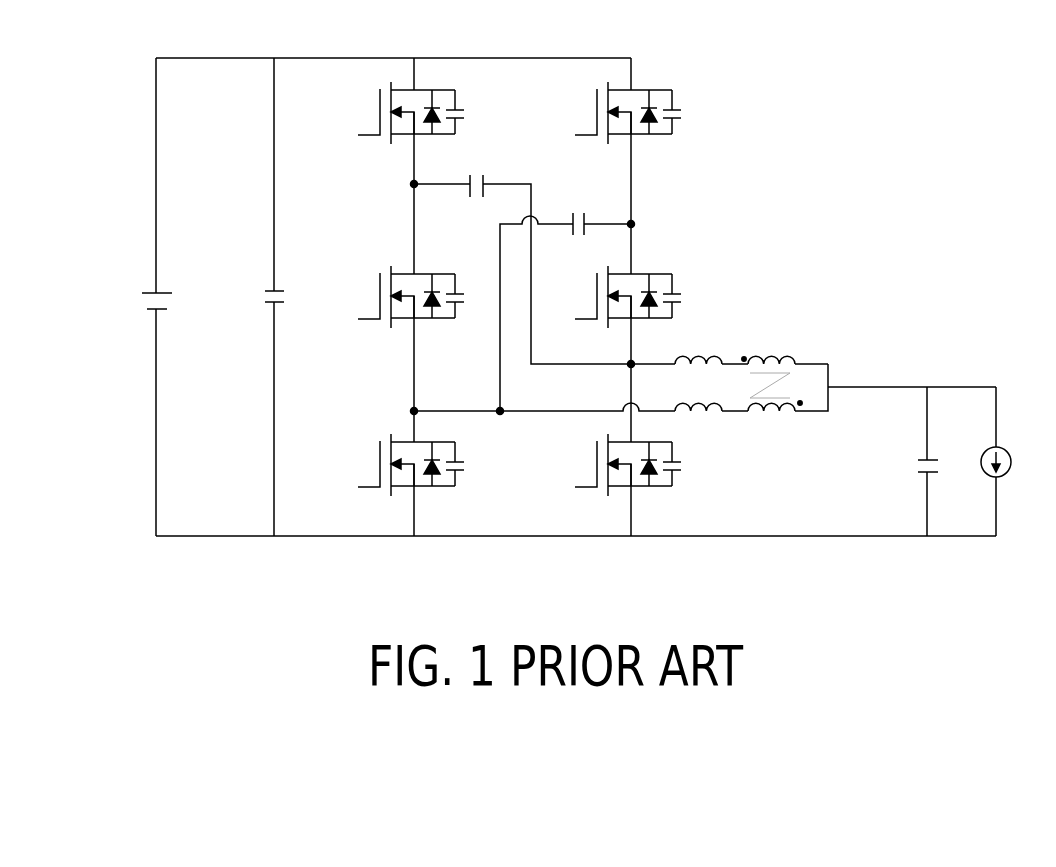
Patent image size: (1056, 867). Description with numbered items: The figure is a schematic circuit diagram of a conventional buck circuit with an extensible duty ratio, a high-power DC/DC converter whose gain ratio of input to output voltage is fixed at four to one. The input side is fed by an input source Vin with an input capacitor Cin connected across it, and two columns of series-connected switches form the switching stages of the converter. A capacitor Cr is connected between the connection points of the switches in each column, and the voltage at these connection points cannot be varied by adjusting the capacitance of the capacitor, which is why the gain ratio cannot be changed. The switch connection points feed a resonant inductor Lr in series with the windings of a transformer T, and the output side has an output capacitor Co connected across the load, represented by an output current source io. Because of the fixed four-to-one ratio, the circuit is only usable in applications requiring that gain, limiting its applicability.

The input voltage source Vin is at (132, 297).
The input capacitor Cin is at (252, 297).
The resonant capacitor Cr is at (522, 277).
The resonant inductor Lr is at (698, 385).
The transformer T is at (772, 387).
The output capacitor Co is at (910, 461).
The output current source io is at (1014, 461).